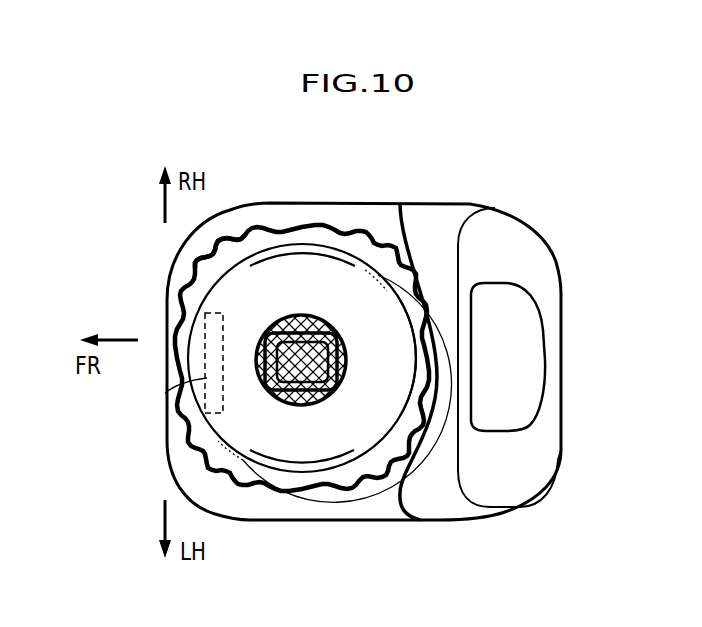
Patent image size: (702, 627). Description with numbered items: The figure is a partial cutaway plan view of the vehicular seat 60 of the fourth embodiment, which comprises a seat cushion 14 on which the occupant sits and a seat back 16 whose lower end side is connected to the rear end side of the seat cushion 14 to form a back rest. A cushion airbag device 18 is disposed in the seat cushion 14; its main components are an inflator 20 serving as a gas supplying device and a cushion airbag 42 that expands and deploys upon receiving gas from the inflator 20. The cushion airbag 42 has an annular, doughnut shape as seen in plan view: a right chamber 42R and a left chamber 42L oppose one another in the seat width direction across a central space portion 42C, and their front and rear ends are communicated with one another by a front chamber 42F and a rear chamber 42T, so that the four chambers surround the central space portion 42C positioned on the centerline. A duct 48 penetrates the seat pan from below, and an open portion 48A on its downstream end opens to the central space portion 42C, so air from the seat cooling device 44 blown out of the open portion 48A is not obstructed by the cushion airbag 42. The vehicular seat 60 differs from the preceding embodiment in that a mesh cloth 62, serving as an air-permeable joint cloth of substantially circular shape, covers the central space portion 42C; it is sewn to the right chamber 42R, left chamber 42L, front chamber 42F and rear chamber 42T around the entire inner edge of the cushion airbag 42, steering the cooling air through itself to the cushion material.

The vehicular seat 60 is at (375, 182).
The seat cushion 14 is at (390, 203).
The seat back 16 is at (457, 203).
The cushion airbag device 18 is at (228, 240).
The inflator 20 is at (165, 393).
The cushion airbag 42 is at (285, 234).
The right chamber 42R is at (269, 268).
The central space portion 42C is at (346, 283).
The front chamber 42F is at (232, 350).
The left chamber 42L is at (330, 447).
The rear chamber 42T is at (368, 375).
The duct 48 is at (300, 403).
The seat cooling device 44 is at (306, 466).
The open portion 48A is at (283, 400).
The mesh cloth 62 is at (286, 319).